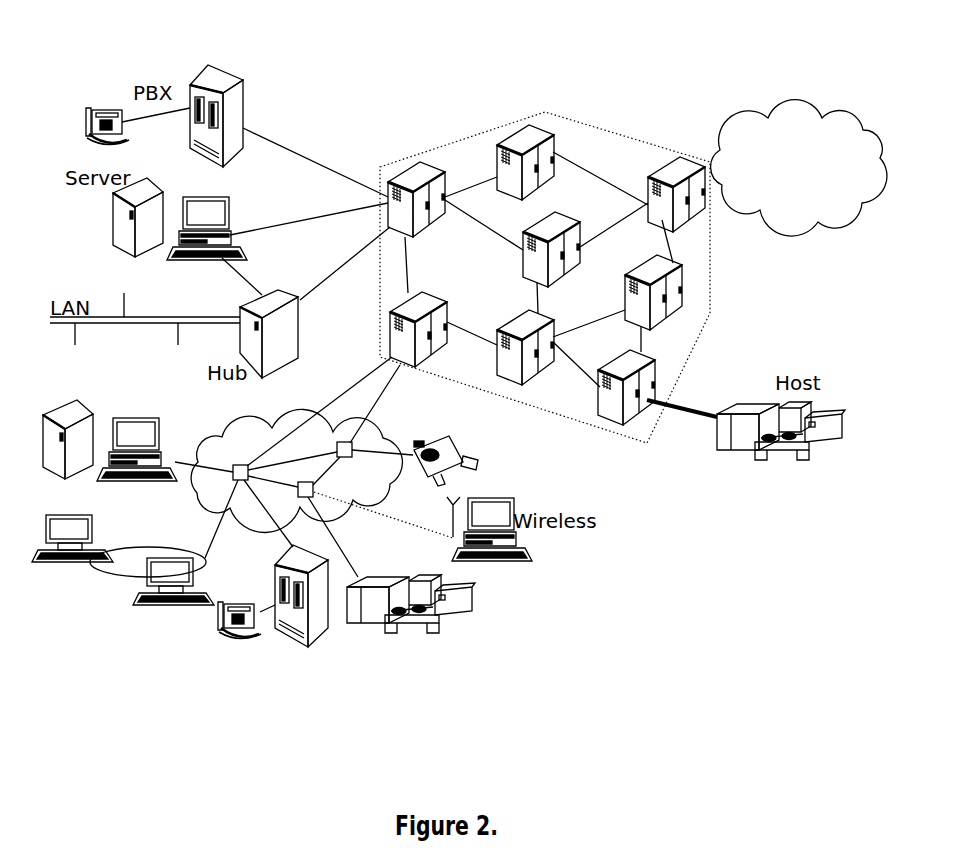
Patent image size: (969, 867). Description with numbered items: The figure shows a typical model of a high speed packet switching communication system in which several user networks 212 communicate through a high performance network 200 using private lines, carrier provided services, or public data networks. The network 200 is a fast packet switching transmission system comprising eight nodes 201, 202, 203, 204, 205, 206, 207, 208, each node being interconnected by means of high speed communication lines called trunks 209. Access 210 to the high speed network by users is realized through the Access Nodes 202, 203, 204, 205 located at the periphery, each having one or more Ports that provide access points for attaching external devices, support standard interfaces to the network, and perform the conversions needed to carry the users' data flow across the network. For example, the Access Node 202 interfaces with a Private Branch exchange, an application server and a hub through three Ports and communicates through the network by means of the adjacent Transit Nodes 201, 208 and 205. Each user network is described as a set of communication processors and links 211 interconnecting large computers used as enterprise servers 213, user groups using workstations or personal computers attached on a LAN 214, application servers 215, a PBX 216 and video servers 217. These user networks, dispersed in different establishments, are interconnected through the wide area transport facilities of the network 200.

The high performance network 200 is at (466, 142).
The transit node 201 is at (552, 133).
The access node 202 is at (446, 171).
The access node 203 is at (658, 356).
The access node 204 is at (673, 163).
The access node 205 is at (447, 301).
The node 206 is at (550, 318).
The node 207 is at (678, 266).
The transit node 208 is at (566, 222).
The trunk 209 is at (604, 233).
The access 210 is at (307, 152).
The communication processors and links 211 is at (248, 428).
The user network 212 is at (817, 106).
The enterprise server 213 is at (416, 579).
The LAN 214 is at (150, 548).
The application server 215 is at (83, 405).
The PBX 216 is at (298, 648).
The video server 217 is at (462, 454).